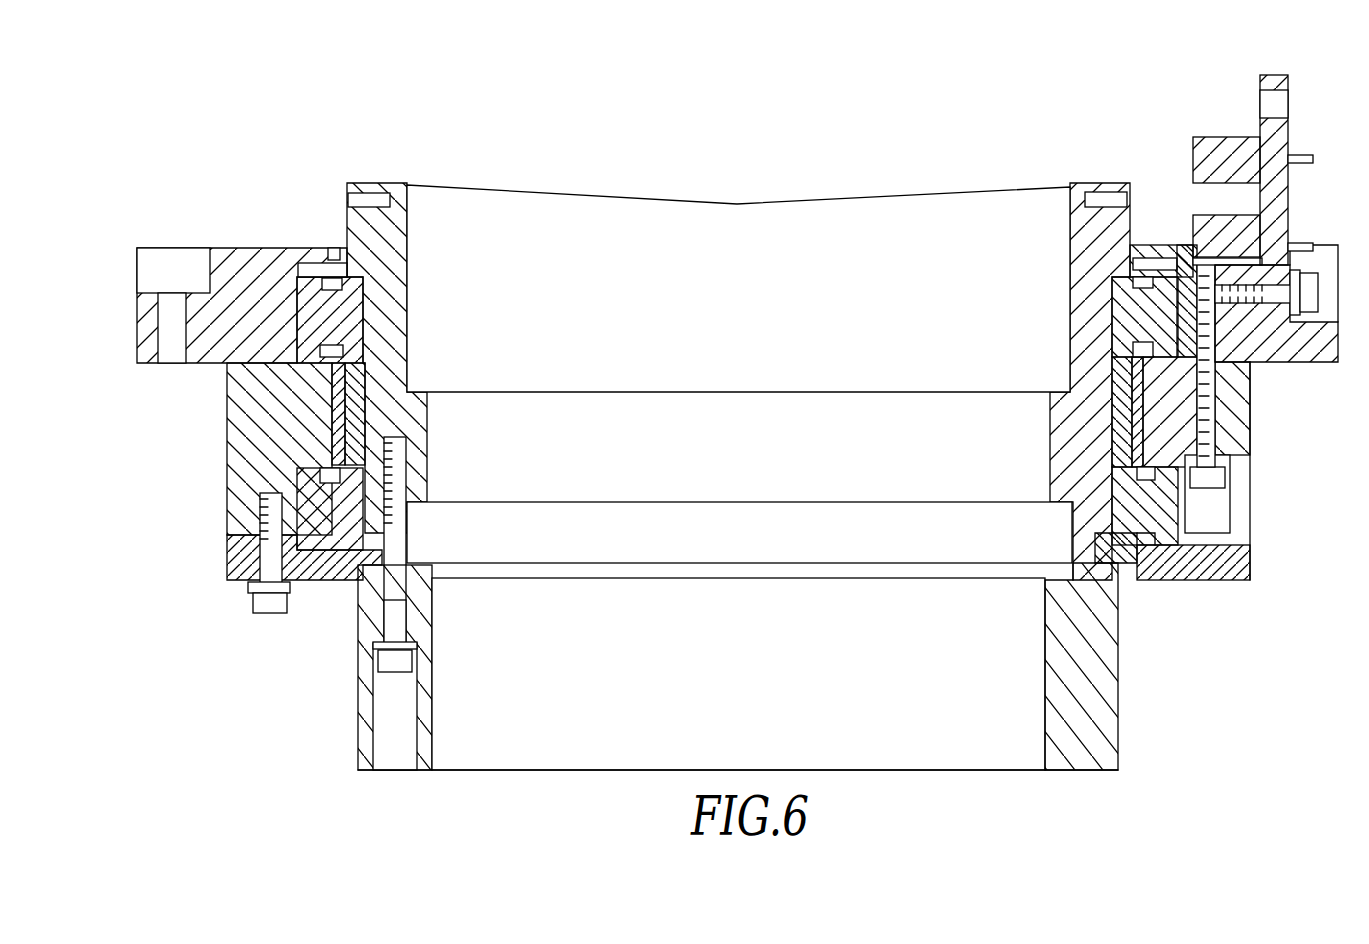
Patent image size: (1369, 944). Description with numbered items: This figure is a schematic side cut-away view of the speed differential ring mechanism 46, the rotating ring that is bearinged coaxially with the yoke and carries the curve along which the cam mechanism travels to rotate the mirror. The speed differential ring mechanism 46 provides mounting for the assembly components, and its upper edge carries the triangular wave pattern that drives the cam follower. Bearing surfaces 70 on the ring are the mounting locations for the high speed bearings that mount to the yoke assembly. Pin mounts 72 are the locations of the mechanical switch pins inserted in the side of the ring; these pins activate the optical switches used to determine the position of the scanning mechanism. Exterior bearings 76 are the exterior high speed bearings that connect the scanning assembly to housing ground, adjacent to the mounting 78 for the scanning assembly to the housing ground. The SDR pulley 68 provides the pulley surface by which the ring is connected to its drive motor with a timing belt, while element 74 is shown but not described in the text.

The speed differential ring mechanism 46 is at (740, 414).
The SDR pulley 68 is at (1105, 690).
The bearing surfaces 70 is at (404, 333).
The pin mounts 72 is at (352, 192).
The mounting bracket 74 is at (1287, 122).
The exterior bearings 76 is at (1125, 290).
The mounting for scanning assembly to the housing ground 78 is at (268, 248).